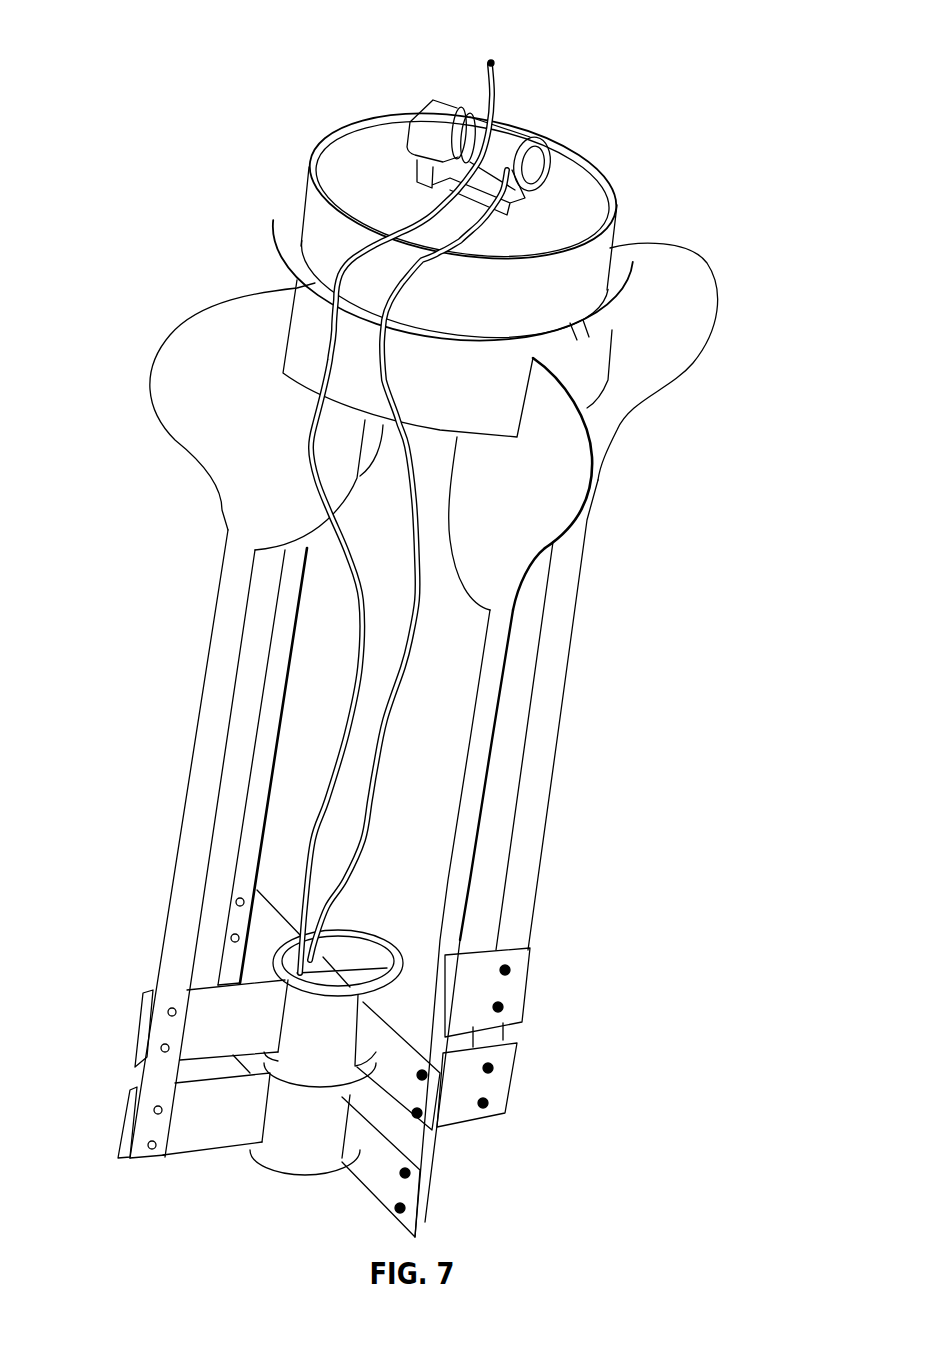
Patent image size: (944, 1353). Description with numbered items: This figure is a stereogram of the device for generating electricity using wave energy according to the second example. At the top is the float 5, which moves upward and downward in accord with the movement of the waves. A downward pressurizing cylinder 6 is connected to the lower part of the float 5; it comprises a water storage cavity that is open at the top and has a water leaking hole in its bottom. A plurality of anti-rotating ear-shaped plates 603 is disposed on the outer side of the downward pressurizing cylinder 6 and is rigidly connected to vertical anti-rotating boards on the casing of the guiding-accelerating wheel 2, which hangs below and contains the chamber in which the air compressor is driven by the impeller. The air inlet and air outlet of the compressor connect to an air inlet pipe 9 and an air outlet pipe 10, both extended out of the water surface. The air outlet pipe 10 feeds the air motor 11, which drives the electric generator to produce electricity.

The guiding-accelerating wheel 2 is at (310, 1040).
The float 5 is at (567, 205).
The downward pressurizing cylinder 6 is at (460, 403).
The air inlet pipe 9 is at (423, 230).
The air outlet pipe 10 is at (428, 284).
The air motor 11 is at (510, 142).
The anti-rotating ear-shaped plate 603 is at (225, 397).